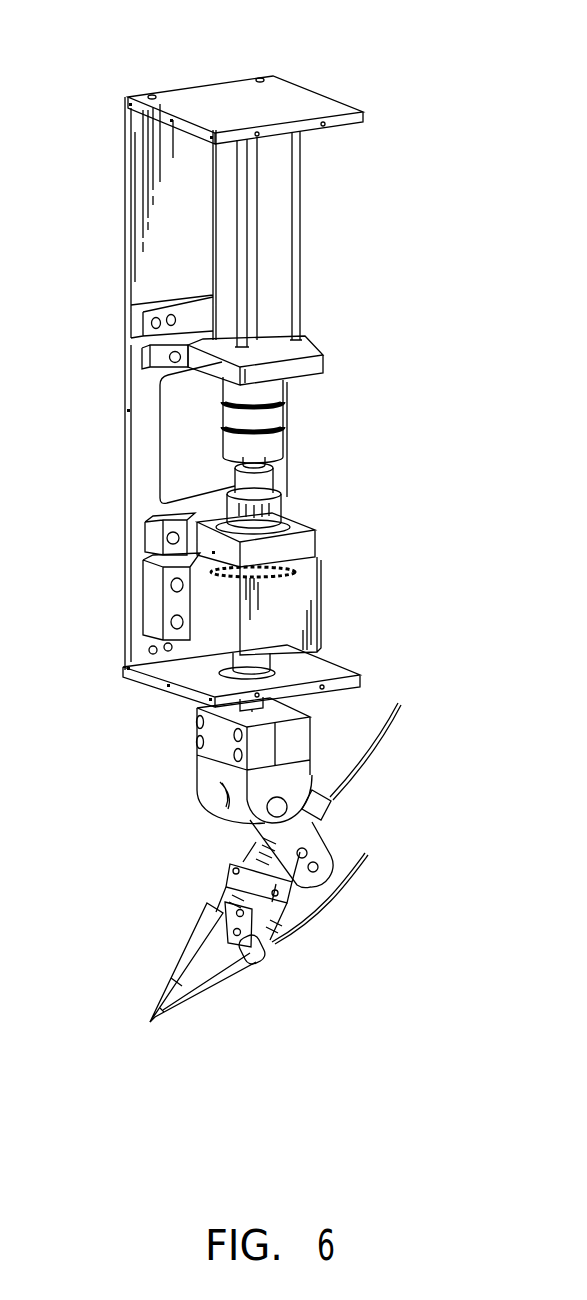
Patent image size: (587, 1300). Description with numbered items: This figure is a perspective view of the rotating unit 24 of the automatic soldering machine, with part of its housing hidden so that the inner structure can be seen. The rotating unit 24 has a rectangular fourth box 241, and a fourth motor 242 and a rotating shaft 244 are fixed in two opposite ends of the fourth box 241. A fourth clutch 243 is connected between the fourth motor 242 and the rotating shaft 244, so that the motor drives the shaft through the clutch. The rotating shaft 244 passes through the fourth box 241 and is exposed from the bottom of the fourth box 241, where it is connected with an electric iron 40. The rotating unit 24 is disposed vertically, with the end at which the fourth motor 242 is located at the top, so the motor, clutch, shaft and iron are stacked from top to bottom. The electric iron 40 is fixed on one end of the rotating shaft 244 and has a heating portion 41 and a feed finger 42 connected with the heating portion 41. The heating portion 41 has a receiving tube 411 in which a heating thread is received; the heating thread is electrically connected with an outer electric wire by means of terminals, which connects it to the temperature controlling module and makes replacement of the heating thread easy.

The rotating unit 24 is at (392, 305).
The fourth box 241 is at (188, 100).
The fourth motor 242 is at (278, 222).
The fourth clutch 243 is at (275, 444).
The rotating shaft 244 is at (262, 491).
The electric iron 40 is at (186, 831).
The heating portion 41 is at (219, 903).
The receiving tube 411 is at (322, 812).
The feed finger 42 is at (173, 987).